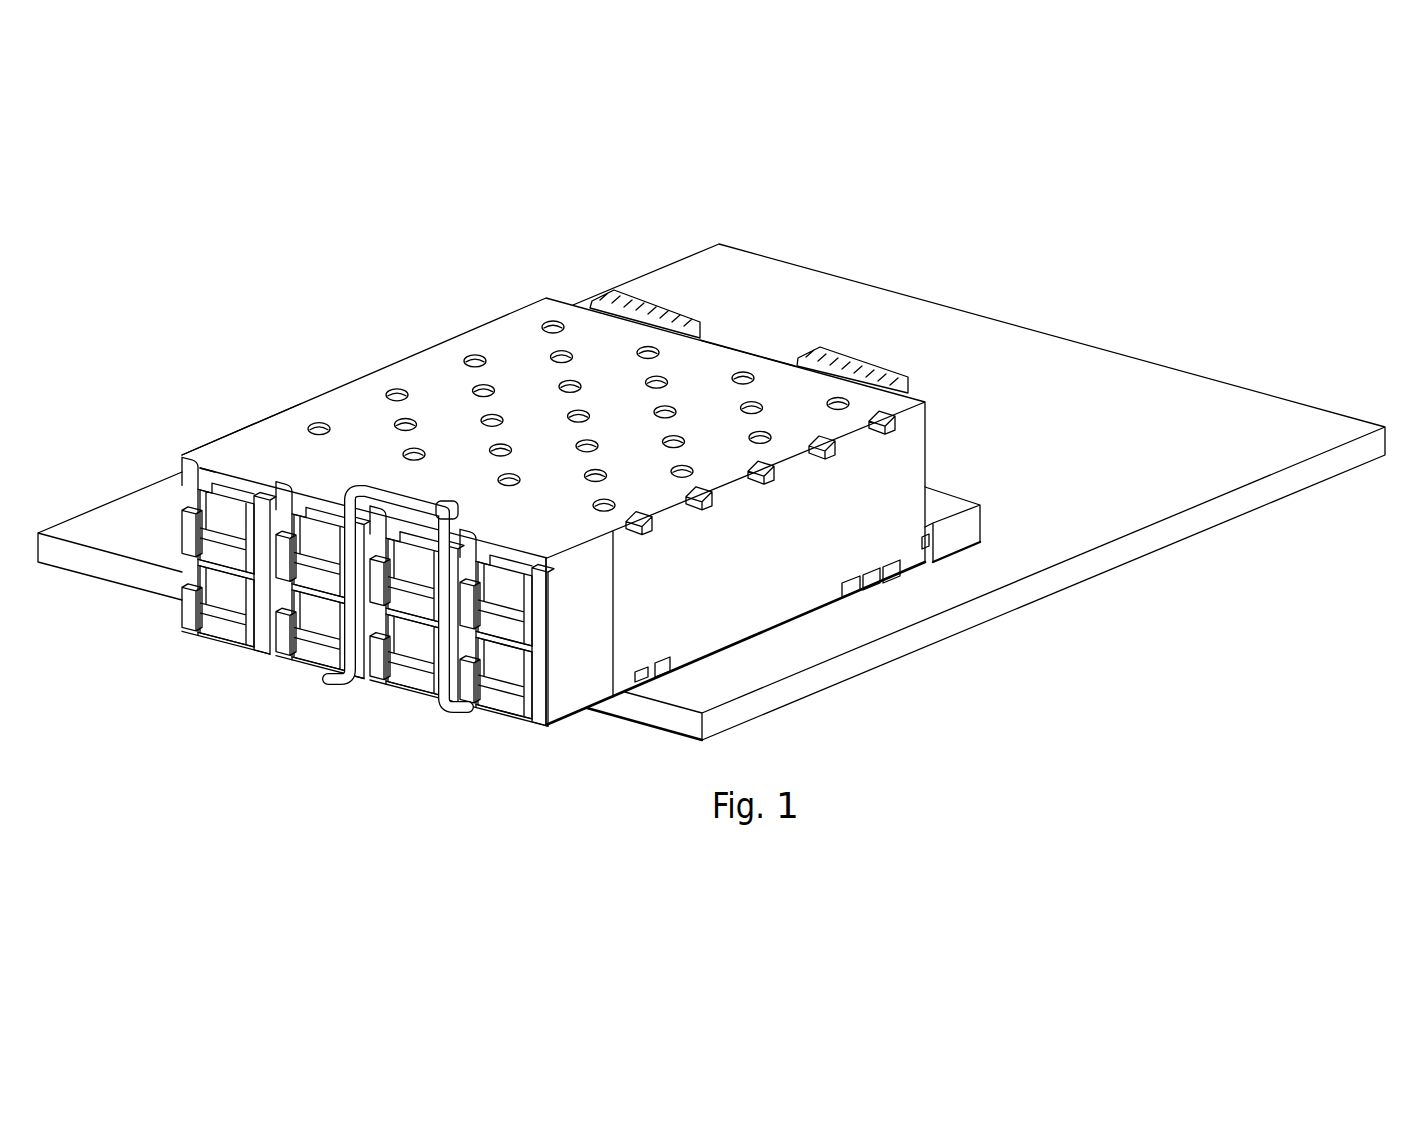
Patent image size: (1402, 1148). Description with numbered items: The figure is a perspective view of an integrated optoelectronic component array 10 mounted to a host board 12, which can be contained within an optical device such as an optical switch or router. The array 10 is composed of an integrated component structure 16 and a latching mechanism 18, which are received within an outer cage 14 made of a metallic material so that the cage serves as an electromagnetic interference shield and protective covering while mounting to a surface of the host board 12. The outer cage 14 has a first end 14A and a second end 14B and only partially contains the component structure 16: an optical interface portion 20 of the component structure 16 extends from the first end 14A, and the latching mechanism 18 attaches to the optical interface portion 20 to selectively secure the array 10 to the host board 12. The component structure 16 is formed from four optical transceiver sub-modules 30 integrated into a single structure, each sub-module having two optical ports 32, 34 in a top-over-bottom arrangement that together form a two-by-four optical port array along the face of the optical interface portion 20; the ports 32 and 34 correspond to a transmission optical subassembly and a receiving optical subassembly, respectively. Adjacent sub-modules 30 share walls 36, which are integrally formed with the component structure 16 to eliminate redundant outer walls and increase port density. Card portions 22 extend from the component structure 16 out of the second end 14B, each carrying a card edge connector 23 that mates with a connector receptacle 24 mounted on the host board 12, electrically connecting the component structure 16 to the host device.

The integrated optoelectronic component array 10 is at (110, 478).
The host board 12 is at (985, 328).
The outer cage 14 is at (410, 378).
The first end 14A is at (295, 443).
The second end 14B is at (740, 348).
The integrated component structure 16 is at (553, 680).
The latching mechanism 18 is at (365, 726).
The optical interface portion 20 is at (230, 465).
The card portions 22 is at (605, 302).
The card edge connector 23 is at (648, 310).
The connector receptacle 24 is at (953, 503).
The optical transceiver sub-modules 30 is at (208, 552).
The optical port 32 is at (240, 535).
The optical port 34 is at (233, 615).
The walls 36 is at (262, 556).